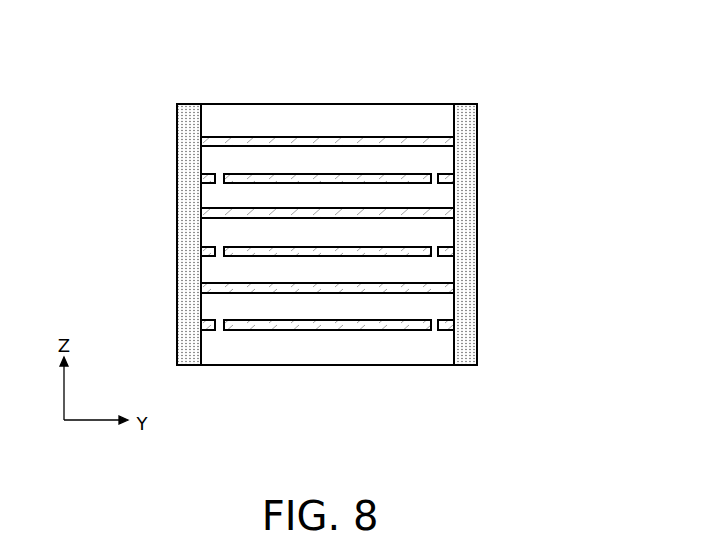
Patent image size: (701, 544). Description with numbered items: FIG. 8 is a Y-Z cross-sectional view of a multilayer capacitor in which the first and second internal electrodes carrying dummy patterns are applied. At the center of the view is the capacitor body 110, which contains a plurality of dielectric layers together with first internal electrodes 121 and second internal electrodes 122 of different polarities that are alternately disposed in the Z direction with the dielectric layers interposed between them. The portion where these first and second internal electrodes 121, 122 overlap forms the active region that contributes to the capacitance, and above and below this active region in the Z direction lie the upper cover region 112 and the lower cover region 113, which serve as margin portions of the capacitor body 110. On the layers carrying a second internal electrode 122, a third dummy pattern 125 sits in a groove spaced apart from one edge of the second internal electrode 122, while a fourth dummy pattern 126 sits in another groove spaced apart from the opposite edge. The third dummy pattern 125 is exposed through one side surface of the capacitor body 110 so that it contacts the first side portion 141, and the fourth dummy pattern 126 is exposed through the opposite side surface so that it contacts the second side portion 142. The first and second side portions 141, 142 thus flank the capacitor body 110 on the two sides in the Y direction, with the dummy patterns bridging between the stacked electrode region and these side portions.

The capacitor body 110 is at (258, 104).
The upper cover region 112 is at (415, 118).
The lower cover region 113 is at (352, 354).
The first internal electrode 121 is at (300, 137).
The second internal electrode 122 is at (358, 178).
The third dummy pattern 125 is at (443, 176).
The fourth dummy pattern 126 is at (208, 175).
The first side portion 141 is at (466, 105).
The second side portion 142 is at (188, 104).